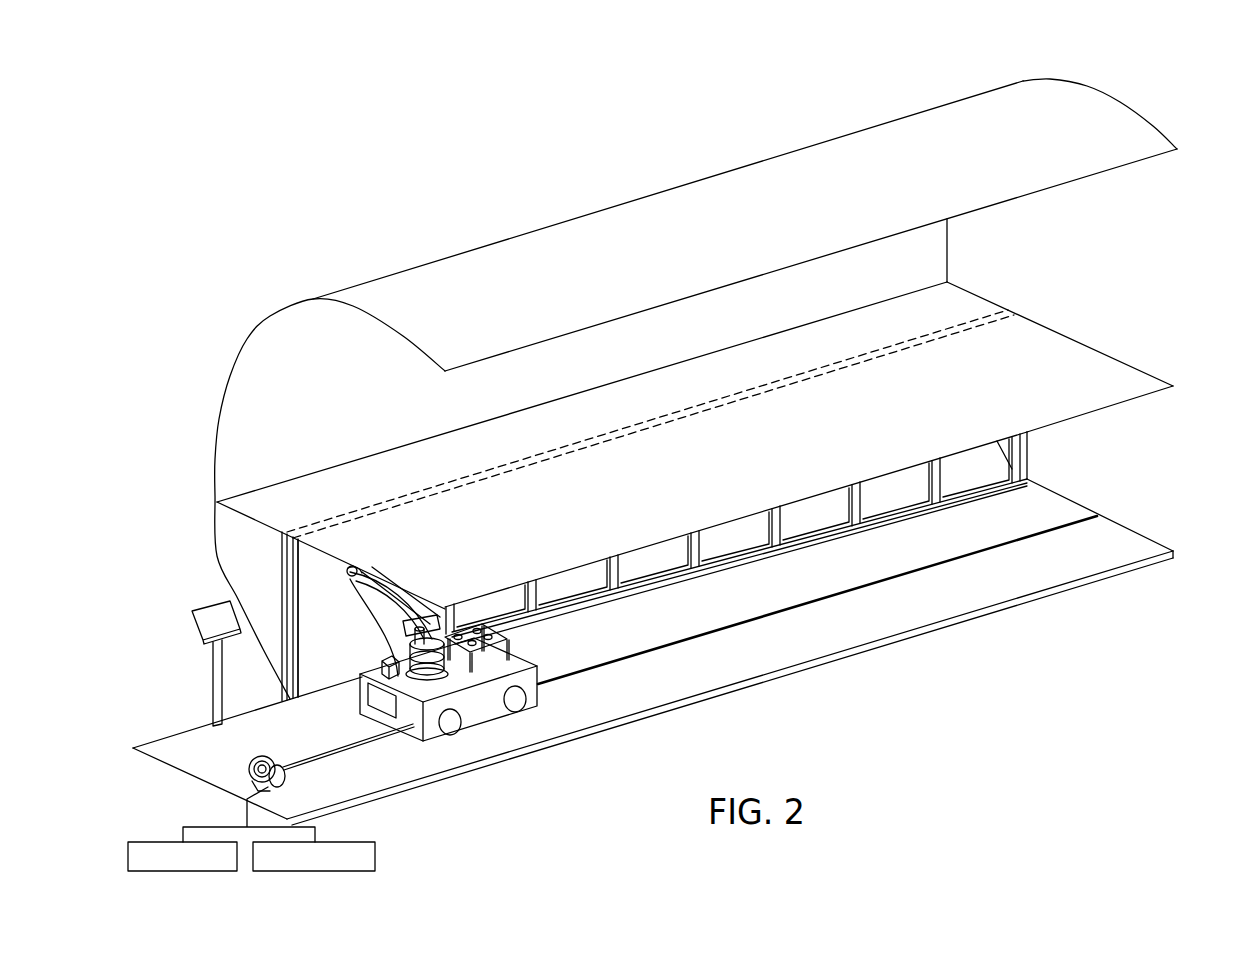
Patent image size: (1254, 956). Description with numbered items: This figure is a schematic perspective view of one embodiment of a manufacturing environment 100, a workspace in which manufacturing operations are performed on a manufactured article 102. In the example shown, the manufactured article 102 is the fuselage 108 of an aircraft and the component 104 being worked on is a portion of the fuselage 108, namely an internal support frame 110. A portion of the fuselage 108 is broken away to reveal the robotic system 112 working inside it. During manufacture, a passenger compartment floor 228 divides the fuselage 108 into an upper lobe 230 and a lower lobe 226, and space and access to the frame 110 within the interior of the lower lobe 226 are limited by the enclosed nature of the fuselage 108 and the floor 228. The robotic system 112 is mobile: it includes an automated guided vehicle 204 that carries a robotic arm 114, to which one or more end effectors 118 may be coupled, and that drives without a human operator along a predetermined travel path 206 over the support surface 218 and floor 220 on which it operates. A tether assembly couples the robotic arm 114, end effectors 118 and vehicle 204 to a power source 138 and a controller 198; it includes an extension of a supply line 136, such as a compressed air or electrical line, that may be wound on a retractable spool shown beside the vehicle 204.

The manufacturing environment 100 is at (209, 319).
The manufactured article 102 is at (366, 283).
The component 104 is at (298, 642).
The fuselage 108 is at (216, 415).
The frame 110 is at (284, 563).
The robotic system 112 is at (339, 739).
The robotic arm 114 is at (433, 606).
The end effector 118 is at (346, 578).
The supply line 136 is at (306, 764).
The power source 138 is at (377, 854).
The controller 198 is at (150, 843).
The automated guided vehicle 204 is at (540, 692).
The travel path 206 is at (718, 632).
The support surface 218 is at (738, 578).
The floor 220 is at (1073, 503).
The lower lobe 226 is at (1166, 447).
The passenger compartment floor 228 is at (1090, 348).
The upper lobe 230 is at (1041, 269).